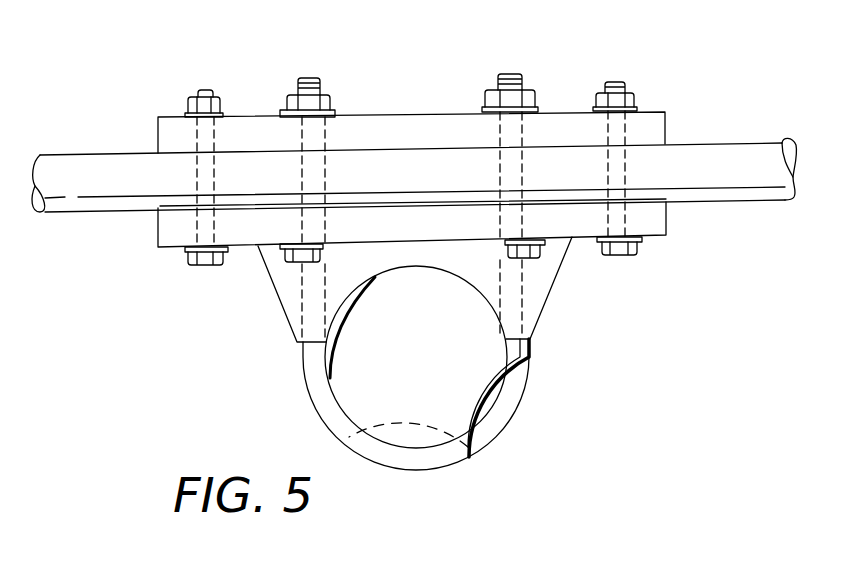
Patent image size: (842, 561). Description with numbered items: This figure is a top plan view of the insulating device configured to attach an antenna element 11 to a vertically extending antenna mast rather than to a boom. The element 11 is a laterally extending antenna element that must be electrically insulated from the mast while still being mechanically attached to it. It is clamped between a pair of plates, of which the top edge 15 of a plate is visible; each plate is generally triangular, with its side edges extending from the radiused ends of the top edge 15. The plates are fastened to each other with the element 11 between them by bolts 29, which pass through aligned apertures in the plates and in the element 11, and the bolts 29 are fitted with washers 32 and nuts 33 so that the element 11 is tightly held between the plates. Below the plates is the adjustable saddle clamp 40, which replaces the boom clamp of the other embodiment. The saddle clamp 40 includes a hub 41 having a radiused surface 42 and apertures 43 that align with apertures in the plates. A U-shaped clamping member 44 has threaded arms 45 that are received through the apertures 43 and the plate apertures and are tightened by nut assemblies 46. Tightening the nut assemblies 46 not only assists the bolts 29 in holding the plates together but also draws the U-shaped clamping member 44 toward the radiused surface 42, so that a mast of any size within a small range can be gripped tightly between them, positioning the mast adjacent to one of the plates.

The element 11 is at (78, 200).
The top edge 15 is at (412, 128).
The bolts 29 is at (208, 262).
The washers 32 is at (184, 110).
The nuts 33 is at (219, 108).
The adjustable saddle clamp 40 is at (530, 395).
The hub 41 is at (347, 264).
The radiused surface 42 is at (330, 378).
The apertures 43 is at (305, 297).
The U-shaped clamping member 44 is at (474, 459).
The threaded arms 45 is at (303, 182).
The nut assemblies 46 is at (327, 98).